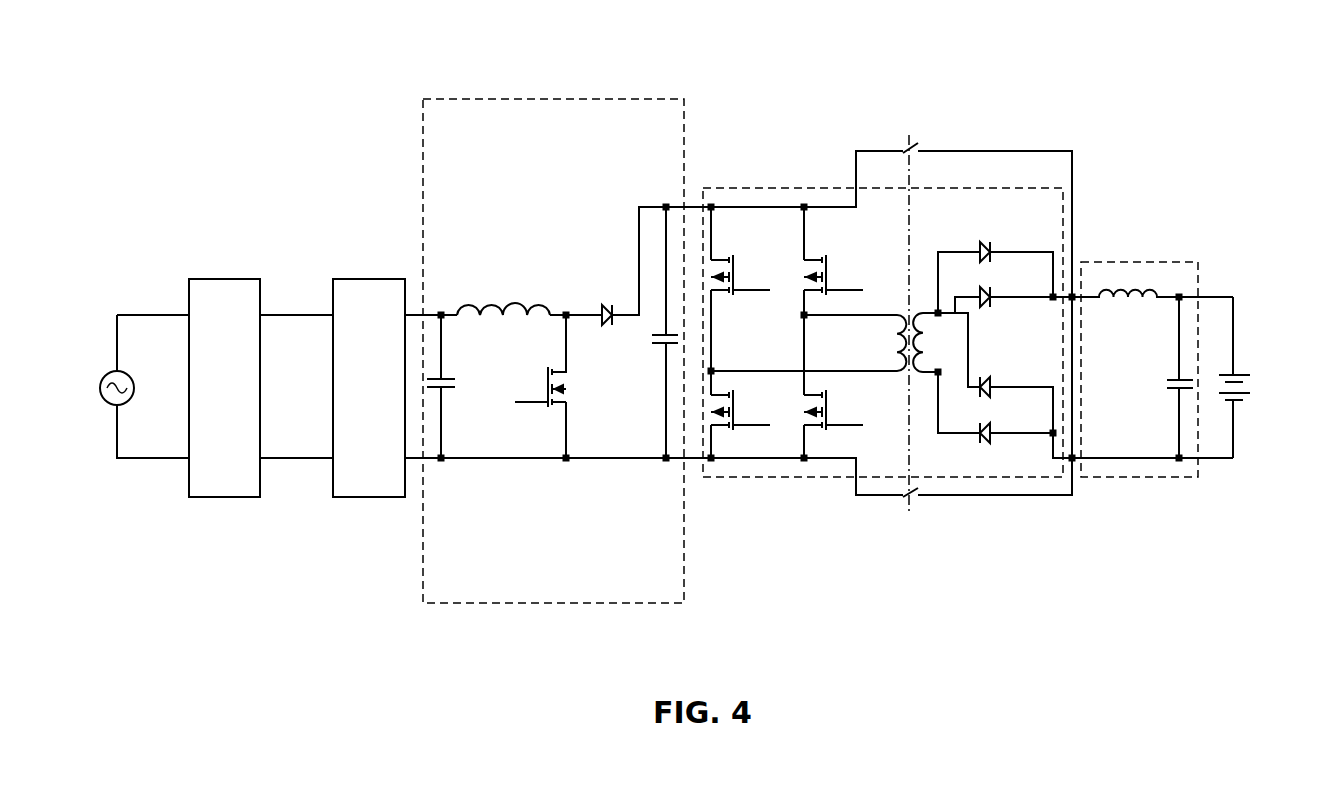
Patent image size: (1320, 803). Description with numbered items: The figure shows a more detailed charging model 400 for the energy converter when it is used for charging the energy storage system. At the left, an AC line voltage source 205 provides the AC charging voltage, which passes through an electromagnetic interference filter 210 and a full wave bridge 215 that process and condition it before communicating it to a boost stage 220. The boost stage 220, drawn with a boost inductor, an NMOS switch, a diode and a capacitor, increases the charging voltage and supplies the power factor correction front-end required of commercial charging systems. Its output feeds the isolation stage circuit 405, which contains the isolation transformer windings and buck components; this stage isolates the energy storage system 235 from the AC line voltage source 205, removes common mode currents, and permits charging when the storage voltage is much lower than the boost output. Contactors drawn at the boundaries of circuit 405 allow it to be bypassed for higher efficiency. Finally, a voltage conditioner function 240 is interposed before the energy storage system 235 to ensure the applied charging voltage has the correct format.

The charging model 400 is at (332, 123).
The AC line voltage source 205 is at (110, 403).
The electromagnetic interference filter 210 is at (224, 388).
The full wave bridge 215 is at (369, 388).
The boost stage 220 is at (570, 97).
The isolation stage circuit 405 is at (837, 187).
The voltage conditioner function 240 is at (1145, 260).
The energy storage system 235 is at (1243, 405).